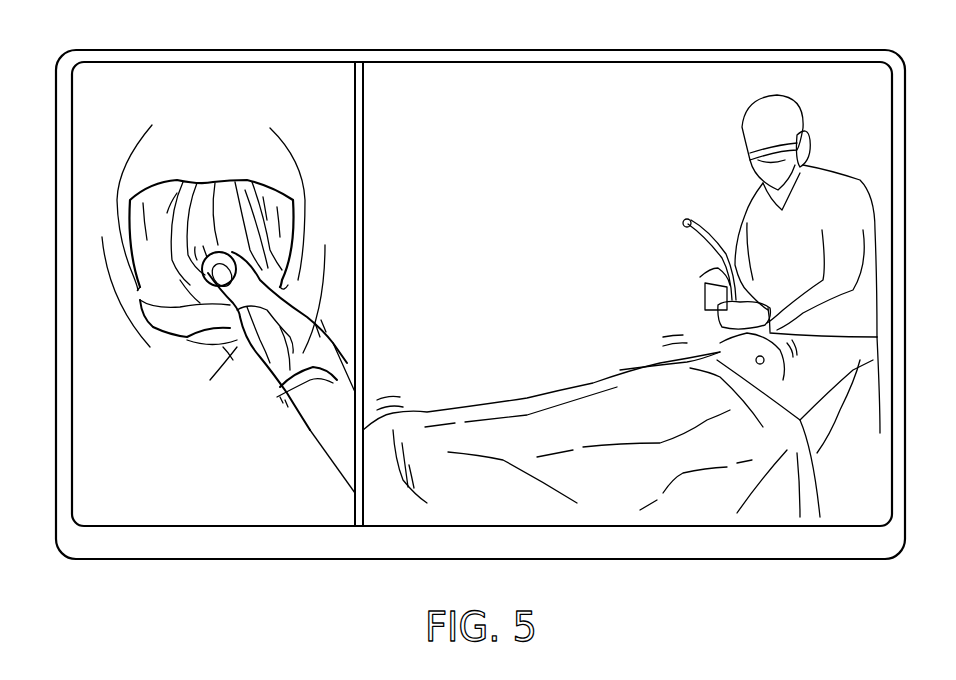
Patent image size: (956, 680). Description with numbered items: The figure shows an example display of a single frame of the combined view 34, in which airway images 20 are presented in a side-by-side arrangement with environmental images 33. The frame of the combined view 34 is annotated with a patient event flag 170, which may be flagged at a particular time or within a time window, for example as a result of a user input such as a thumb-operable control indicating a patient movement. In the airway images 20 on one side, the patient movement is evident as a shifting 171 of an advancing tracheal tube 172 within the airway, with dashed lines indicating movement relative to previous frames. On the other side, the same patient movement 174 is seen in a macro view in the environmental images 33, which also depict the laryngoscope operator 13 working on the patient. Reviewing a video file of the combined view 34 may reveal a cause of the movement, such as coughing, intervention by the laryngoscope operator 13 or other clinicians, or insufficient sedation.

The laryngoscope operator 13 is at (755, 125).
The airway images 20 is at (125, 505).
The environmental images 33 is at (845, 95).
The combined view 34 is at (60, 205).
The patient event flag 170 is at (110, 68).
The shifting 171 is at (227, 350).
The advancing tracheal tube 172 is at (320, 450).
The patient movement 174 is at (540, 372).